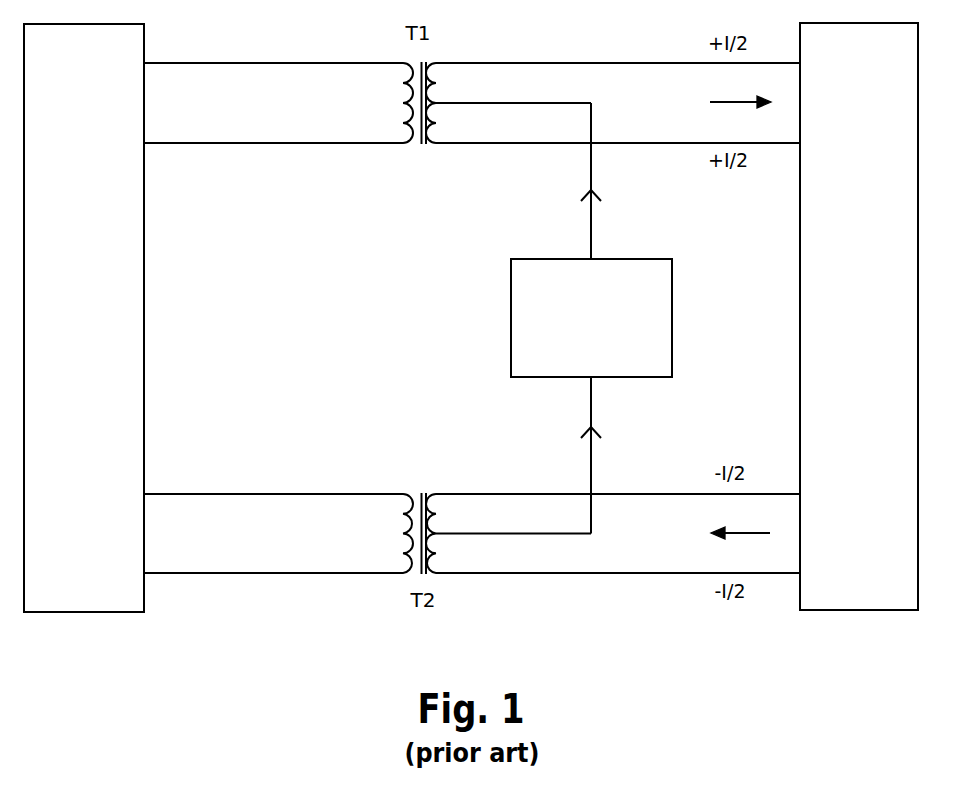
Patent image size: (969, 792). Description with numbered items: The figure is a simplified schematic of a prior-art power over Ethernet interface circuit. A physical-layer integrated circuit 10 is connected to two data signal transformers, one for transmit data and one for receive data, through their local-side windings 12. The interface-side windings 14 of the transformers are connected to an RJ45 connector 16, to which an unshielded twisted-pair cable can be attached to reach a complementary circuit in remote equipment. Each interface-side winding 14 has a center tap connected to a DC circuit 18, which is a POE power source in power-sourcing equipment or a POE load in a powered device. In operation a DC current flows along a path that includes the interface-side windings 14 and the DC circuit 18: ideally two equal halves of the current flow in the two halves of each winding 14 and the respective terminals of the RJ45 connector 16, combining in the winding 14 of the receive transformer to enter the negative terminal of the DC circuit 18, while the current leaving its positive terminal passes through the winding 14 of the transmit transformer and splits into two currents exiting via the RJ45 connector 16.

The physical-layer integrated circuit 10 is at (72, 342).
The local-side windings 12 is at (400, 144).
The interface-side windings 14 is at (452, 144).
The RJ45 connector 16 is at (848, 342).
The DC circuit 18 is at (580, 368).